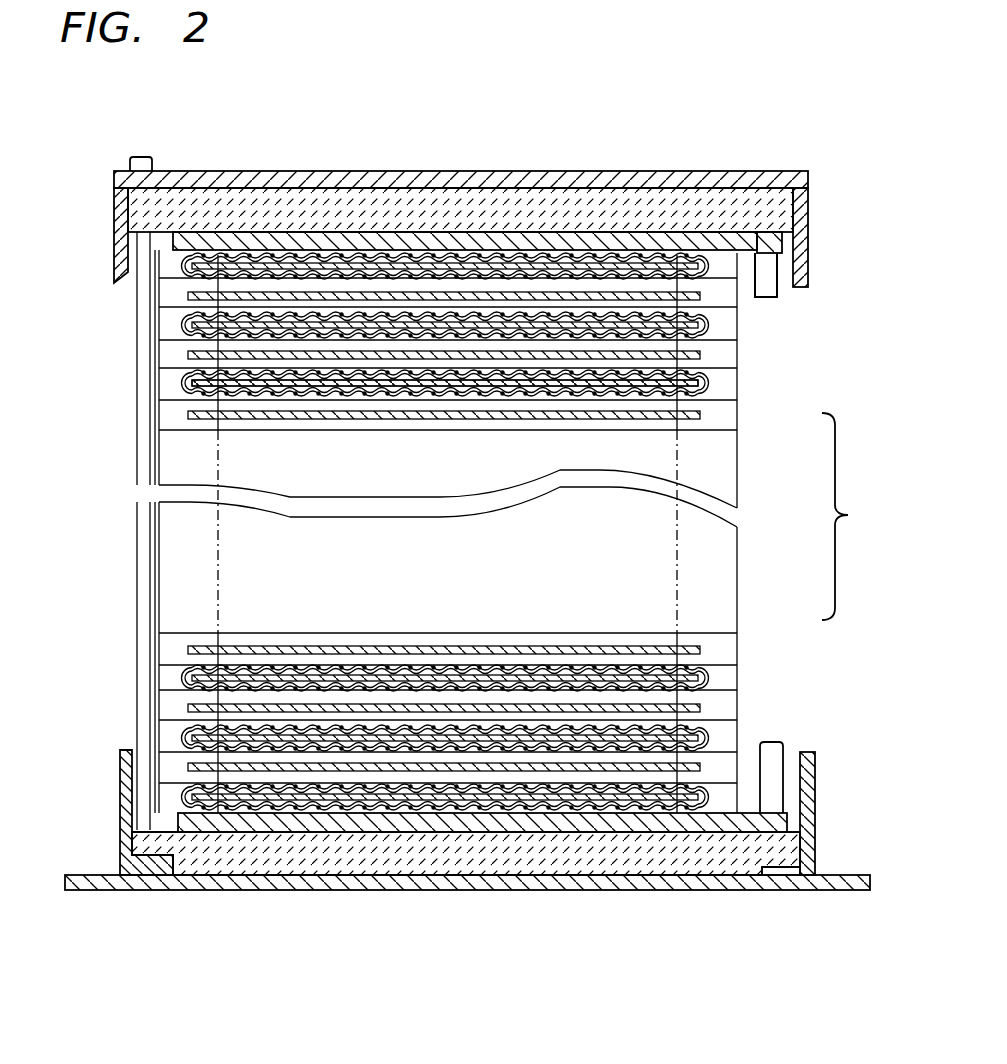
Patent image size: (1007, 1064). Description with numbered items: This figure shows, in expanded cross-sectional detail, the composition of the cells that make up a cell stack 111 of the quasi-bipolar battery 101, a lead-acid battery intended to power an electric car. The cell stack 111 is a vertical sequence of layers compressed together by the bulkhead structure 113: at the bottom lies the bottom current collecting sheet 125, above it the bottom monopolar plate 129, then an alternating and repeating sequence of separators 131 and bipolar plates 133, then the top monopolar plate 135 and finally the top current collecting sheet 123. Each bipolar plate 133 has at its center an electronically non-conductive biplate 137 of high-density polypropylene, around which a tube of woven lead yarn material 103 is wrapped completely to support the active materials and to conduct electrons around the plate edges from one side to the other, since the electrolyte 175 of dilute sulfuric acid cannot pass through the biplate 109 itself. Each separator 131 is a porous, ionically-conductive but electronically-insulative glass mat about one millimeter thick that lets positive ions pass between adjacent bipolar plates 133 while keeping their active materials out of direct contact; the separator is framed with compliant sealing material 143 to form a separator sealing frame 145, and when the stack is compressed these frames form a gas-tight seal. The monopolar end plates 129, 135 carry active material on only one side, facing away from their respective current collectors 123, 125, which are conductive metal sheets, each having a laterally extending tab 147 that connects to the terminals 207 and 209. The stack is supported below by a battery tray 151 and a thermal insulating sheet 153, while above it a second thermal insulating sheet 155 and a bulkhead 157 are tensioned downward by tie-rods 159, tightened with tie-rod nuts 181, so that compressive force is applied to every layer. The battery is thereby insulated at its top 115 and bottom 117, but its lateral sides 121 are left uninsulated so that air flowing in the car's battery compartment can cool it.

The quasi-bipolar battery 101 is at (760, 932).
The woven lead yarn material 103 is at (410, 398).
The biplate 109 is at (555, 385).
The cell stack 111 is at (492, 554).
The bulkhead structure 113 is at (709, 170).
The top 115 is at (461, 146).
The bottom 117 is at (205, 893).
The lateral sides 121 is at (137, 518).
The top current collecting sheet 123 is at (427, 232).
The bottom current collecting sheet 125 is at (440, 828).
The bottom monopolar plate 129 is at (170, 802).
The separator 131 is at (168, 415).
The bipolar plate 133 is at (168, 385).
The top monopolar plate 135 is at (722, 263).
The biplate 137 is at (742, 637).
The compliant sealing material 143 is at (165, 407).
The separator sealing frame 145 is at (728, 293).
The projecting tab 147 is at (768, 238).
The battery tray 151 is at (575, 893).
The thermal insulating sheet 153 is at (258, 855).
The second thermal insulating sheet 155 is at (635, 210).
The bulkhead 157 is at (521, 173).
The tie-rods 159 is at (140, 565).
The electrolyte 175 is at (288, 273).
The tie-rod nuts 181 is at (153, 162).
The terminal 207 is at (788, 757).
The terminal 209 is at (778, 268).